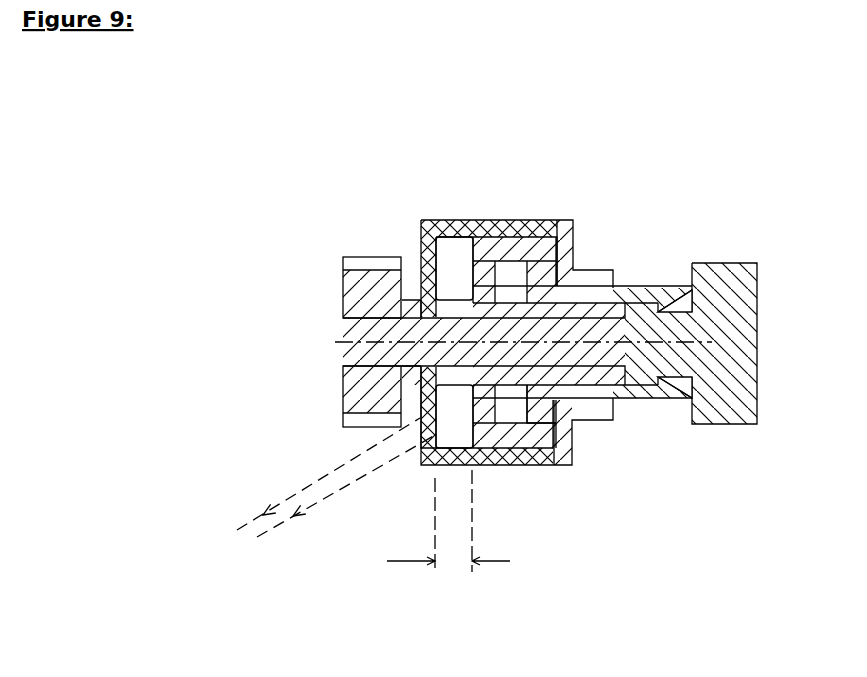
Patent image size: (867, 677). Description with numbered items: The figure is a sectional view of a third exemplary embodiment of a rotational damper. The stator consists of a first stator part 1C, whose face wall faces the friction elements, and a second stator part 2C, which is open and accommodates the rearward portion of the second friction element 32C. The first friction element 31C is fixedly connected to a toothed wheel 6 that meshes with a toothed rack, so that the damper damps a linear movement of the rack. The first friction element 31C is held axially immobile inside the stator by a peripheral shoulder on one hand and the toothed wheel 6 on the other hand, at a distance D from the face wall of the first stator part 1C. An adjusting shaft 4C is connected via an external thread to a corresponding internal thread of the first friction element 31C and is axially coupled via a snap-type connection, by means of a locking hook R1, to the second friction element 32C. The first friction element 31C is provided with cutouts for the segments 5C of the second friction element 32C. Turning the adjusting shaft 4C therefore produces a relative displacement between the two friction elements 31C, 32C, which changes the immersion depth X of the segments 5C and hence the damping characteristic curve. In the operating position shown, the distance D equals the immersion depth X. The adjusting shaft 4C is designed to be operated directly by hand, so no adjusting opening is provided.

The first stator part 1C is at (560, 232).
The second stator part 2C is at (568, 258).
The adjusting shaft 4C is at (727, 410).
The segments 5C is at (515, 272).
The toothed wheel 6 is at (373, 283).
The locking hook R1 is at (670, 300).
The first friction element 31C is at (436, 415).
The second friction element 32C is at (540, 407).
The immersion depth X is at (337, 487).
The distance D is at (448, 521).